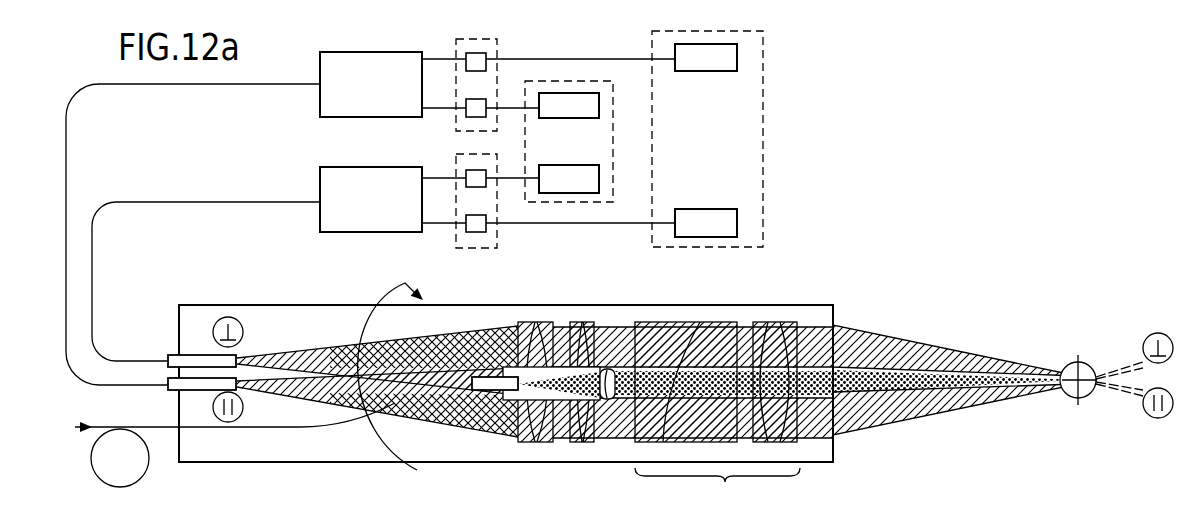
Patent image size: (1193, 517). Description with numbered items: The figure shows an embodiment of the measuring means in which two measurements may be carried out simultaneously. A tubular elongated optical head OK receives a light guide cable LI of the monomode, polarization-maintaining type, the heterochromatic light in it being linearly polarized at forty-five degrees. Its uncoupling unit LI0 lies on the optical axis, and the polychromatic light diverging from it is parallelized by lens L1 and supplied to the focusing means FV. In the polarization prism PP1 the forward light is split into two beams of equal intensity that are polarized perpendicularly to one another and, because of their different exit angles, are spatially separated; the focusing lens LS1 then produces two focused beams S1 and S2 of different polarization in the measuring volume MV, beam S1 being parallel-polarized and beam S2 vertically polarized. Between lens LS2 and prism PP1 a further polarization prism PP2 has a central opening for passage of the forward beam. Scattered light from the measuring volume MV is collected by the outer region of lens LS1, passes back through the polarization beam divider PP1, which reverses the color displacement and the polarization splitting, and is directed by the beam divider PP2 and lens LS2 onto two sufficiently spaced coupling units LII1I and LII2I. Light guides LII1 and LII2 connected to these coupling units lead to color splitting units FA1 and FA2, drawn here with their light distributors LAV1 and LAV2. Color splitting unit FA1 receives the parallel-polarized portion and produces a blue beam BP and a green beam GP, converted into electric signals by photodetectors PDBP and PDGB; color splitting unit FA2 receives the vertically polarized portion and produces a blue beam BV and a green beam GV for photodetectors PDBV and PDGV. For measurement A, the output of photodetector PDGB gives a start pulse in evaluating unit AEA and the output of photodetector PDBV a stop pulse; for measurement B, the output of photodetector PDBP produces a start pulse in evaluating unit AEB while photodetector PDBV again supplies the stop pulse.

The color splitting unit FA1 is at (371, 84).
The color splitting unit FA2 is at (371, 199).
The parallel-polarized blue beam BP is at (444, 48).
The parallel-polarized green beam GP is at (444, 96).
The blue beam BV is at (444, 165).
The green beam GV is at (444, 210).
The first light distributor LAV1 is at (475, 40).
The second light distributor LAV2 is at (476, 248).
The photodetector PDBP is at (484, 60).
The photodetector PDGB is at (466, 112).
The photodetector PDBV is at (482, 173).
The photodetector PDGV is at (472, 228).
The evaluating unit AEA is at (571, 82).
The evaluating unit AEB is at (763, 40).
The light guide LII1 is at (67, 162).
The light guide LII2 is at (92, 245).
The coupling unit LII2I is at (197, 356).
The coupling unit LII1I is at (178, 386).
The light guide cable LI is at (298, 428).
The uncoupling unit LI0 is at (485, 391).
The lens L1 is at (613, 399).
The lens LS2 is at (536, 322).
The polarization prism PP2 is at (583, 322).
The optical head OK is at (641, 310).
The polarization prism PP1 is at (709, 330).
The focusing lens LS1 is at (771, 322).
The focusing means FV is at (717, 491).
The focused beam S2 is at (968, 360).
The focused beam S1 is at (958, 402).
The measuring volume MV is at (1086, 362).